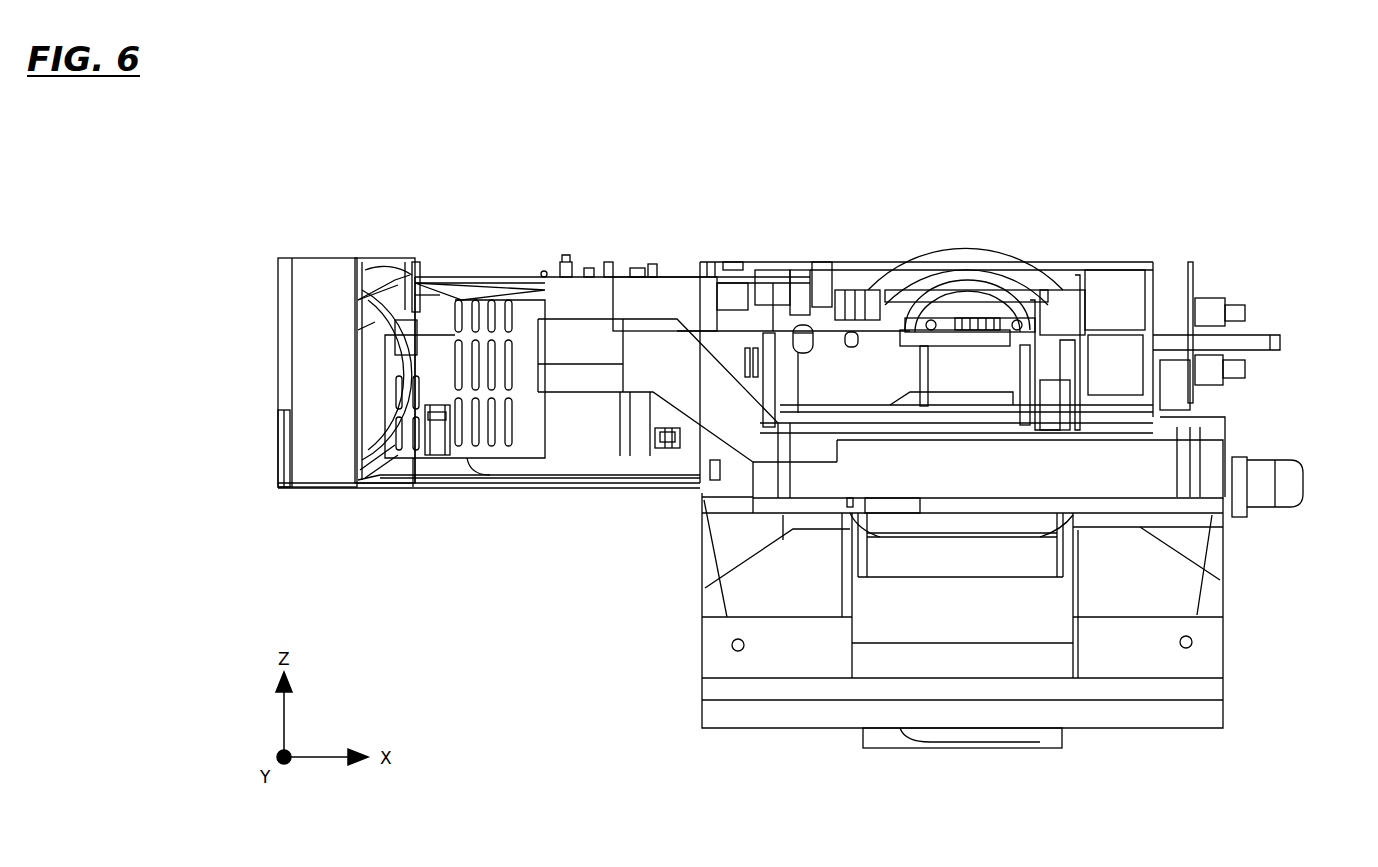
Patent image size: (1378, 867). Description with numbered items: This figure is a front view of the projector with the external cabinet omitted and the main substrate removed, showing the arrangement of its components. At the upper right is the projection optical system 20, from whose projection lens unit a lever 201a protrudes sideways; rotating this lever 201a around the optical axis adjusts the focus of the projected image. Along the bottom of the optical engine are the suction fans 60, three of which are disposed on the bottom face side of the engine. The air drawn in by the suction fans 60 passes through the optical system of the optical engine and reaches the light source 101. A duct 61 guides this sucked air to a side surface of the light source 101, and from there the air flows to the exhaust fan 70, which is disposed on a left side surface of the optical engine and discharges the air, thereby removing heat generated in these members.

The exhaust fan 70 is at (378, 266).
The light source 101 is at (545, 275).
The duct 61 is at (703, 413).
The projection optical system 20 is at (978, 262).
The lever 201a is at (1262, 338).
The suction fan 60 is at (900, 475).